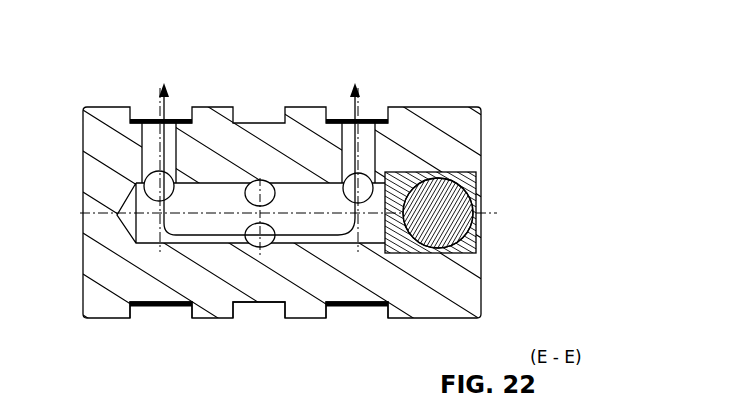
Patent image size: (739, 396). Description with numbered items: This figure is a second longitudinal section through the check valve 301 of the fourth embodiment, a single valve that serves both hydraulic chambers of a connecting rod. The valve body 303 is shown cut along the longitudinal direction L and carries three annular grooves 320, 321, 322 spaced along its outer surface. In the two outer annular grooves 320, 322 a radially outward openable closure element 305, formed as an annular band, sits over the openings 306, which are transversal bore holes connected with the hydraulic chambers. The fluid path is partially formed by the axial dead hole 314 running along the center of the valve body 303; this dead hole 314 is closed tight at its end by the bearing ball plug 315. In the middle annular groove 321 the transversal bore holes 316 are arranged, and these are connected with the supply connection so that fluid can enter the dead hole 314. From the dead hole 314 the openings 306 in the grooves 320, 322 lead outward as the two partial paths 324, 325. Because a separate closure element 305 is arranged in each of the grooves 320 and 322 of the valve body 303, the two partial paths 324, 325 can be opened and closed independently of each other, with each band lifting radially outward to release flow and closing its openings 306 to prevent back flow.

The check valve 301 is at (528, 127).
The valve body 303 is at (486, 273).
The closure element 305 is at (177, 308).
The openings 306 is at (150, 140).
The axial dead hole 314 is at (150, 228).
The bearing ball plug 315 is at (473, 190).
The transversal bore holes 316 is at (259, 178).
The annular groove 320 is at (132, 322).
The annular groove 321 is at (256, 305).
The annular groove 322 is at (328, 316).
The partial path 324 is at (164, 108).
The partial path 325 is at (354, 108).
The longitudinal direction L is at (78, 211).